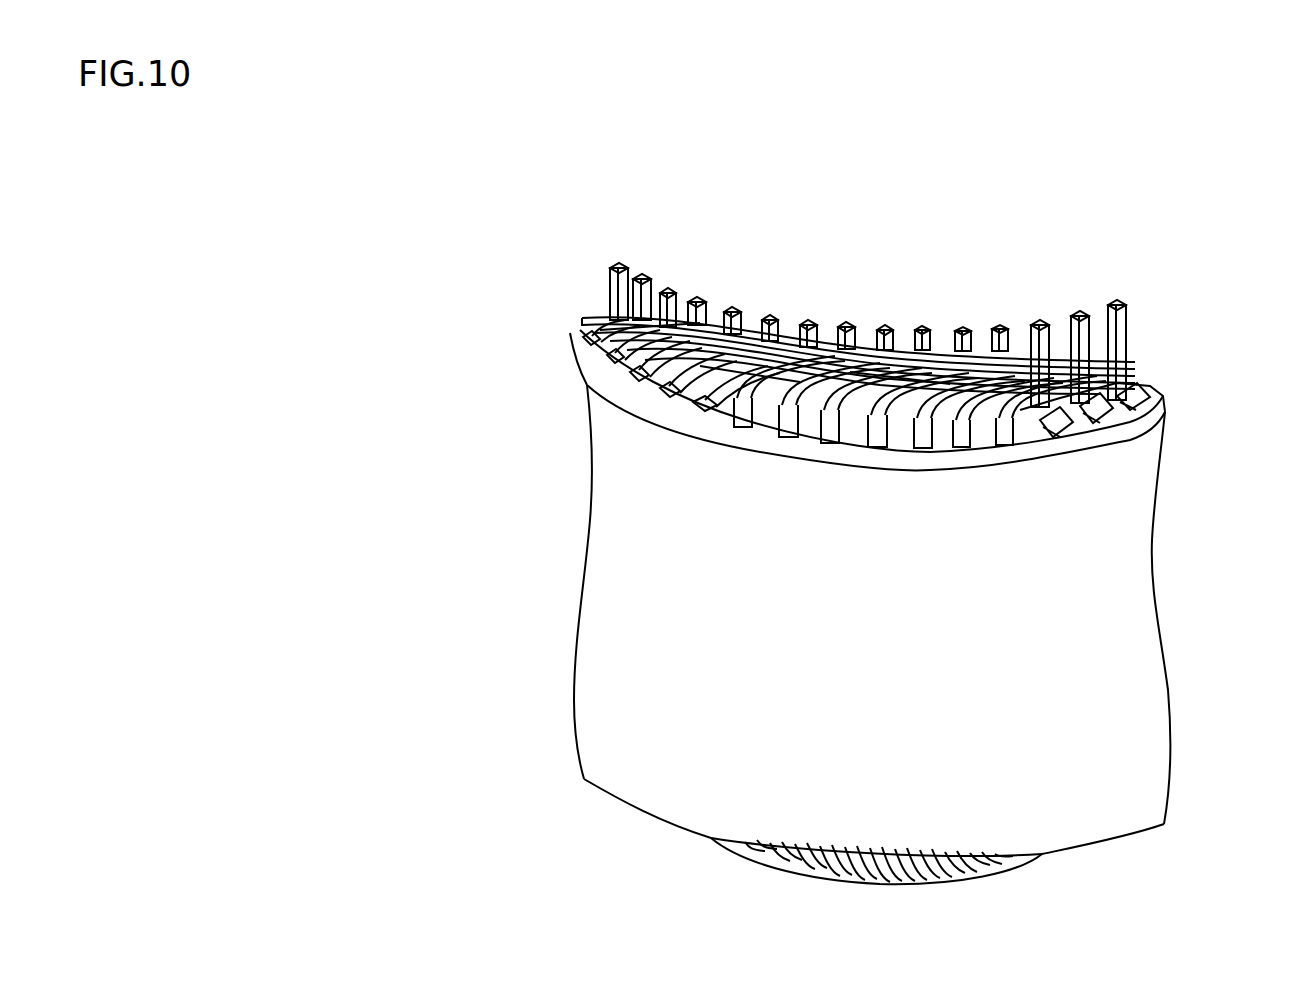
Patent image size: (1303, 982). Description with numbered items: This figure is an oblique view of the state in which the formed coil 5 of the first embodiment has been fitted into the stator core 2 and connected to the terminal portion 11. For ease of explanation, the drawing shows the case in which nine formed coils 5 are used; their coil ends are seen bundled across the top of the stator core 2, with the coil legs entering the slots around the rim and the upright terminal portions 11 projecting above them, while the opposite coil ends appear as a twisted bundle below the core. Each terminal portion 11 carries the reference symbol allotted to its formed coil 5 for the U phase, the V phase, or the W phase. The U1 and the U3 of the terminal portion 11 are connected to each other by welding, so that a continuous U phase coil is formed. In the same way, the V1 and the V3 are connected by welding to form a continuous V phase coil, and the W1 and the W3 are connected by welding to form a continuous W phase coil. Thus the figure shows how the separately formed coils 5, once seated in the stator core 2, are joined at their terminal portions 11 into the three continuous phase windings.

The stator core 2 is at (1148, 673).
The formed coil 5 is at (713, 318).
The terminal portion 11 is at (1127, 342).
The U1 terminal portion U1 is at (893, 328).
The V1 terminal portion V1 is at (845, 320).
The W1 terminal portion W1 is at (800, 320).
The U3 terminal portion U3 is at (668, 288).
The V3 terminal portion V3 is at (641, 277).
The W3 terminal portion W3 is at (613, 264).